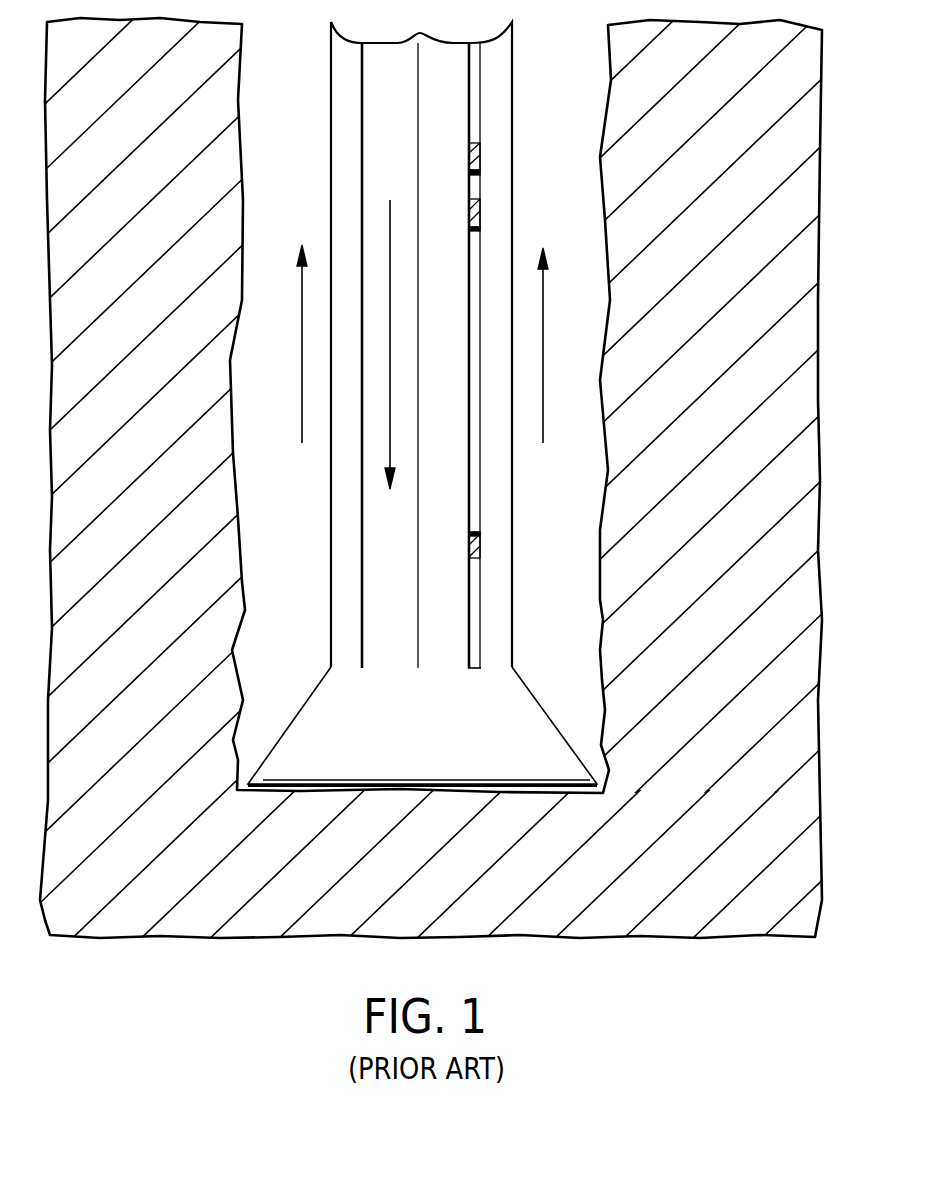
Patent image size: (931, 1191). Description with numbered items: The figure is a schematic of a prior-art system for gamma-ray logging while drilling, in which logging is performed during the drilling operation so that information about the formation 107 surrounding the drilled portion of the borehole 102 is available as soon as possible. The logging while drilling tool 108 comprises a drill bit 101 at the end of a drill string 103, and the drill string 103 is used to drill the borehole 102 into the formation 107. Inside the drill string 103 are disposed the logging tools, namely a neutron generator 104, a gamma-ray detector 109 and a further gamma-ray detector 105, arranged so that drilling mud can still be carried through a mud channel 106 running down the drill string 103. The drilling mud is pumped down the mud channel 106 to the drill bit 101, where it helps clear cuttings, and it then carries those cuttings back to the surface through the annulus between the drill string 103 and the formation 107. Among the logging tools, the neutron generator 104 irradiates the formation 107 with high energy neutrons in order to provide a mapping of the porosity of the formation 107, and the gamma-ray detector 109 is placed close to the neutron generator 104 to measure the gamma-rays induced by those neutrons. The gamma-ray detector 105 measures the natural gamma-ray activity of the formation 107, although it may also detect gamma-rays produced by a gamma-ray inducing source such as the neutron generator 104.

The drill bit 101 is at (532, 695).
The borehole 102 is at (608, 565).
The drill string 103 is at (512, 465).
The neutron generator 104 is at (481, 155).
The gamma-ray detector 105 is at (481, 545).
The mud channel 106 is at (362, 488).
The formation 107 is at (727, 433).
The logging while drilling tool 108 is at (526, 659).
The gamma-ray detector 109 is at (481, 210).